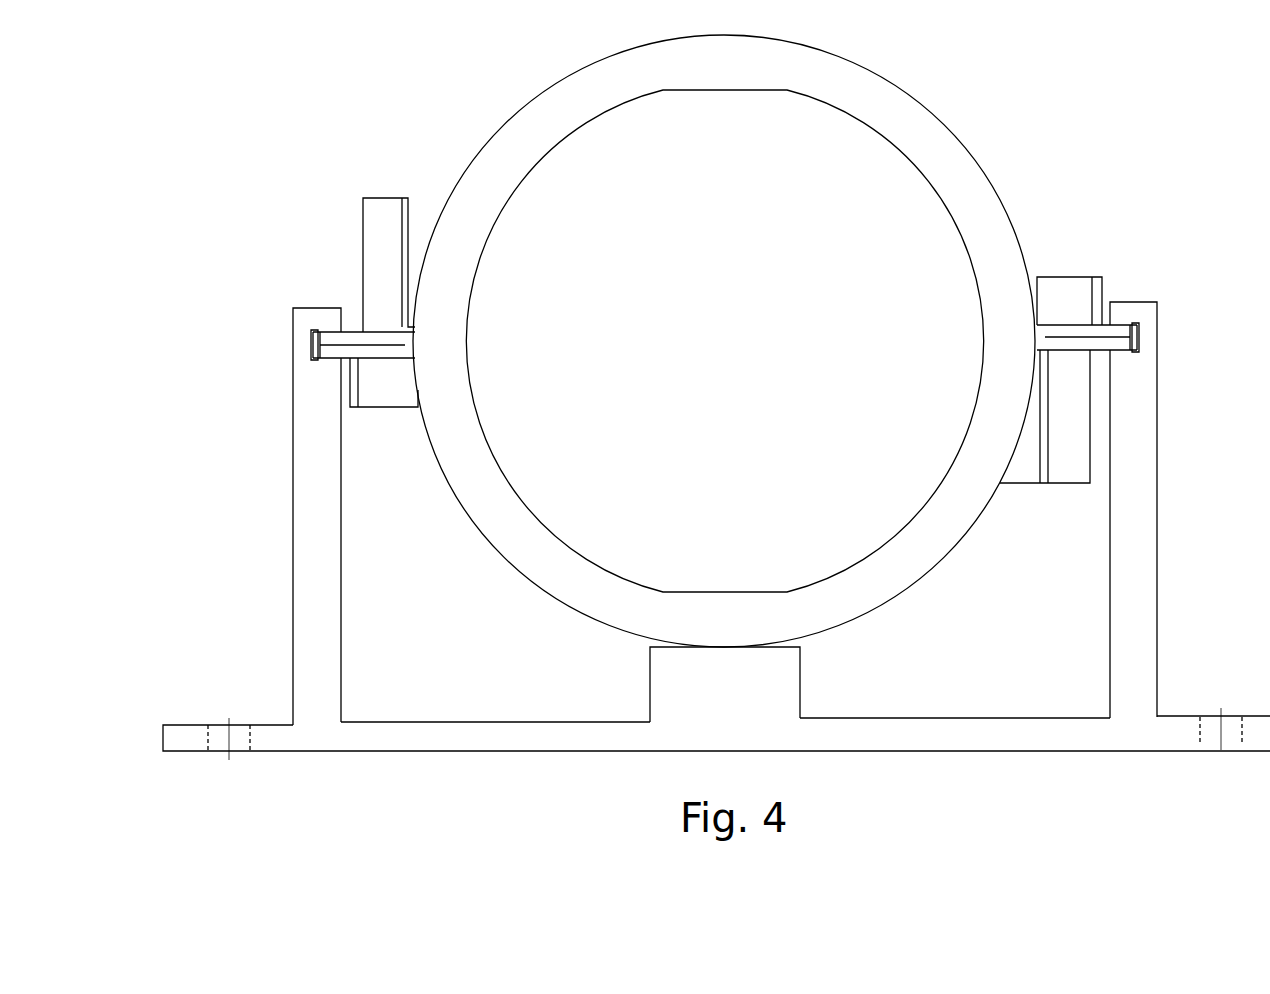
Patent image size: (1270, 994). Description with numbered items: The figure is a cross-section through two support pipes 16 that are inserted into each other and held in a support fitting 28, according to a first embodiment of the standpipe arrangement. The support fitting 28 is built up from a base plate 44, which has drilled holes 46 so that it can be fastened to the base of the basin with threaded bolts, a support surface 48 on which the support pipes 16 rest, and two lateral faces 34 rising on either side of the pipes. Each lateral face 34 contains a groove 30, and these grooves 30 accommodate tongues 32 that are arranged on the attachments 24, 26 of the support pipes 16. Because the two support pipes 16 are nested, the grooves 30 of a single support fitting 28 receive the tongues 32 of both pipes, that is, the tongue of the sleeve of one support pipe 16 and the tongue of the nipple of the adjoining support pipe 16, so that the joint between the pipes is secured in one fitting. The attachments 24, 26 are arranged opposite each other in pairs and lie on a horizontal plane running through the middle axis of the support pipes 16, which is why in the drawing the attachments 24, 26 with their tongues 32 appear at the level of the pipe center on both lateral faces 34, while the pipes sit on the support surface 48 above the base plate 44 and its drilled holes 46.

The support pipe 16 is at (1005, 122).
The attachment 24 is at (385, 395).
The attachment 26 is at (380, 215).
The support fitting 28 is at (1178, 615).
The groove 30 is at (313, 345).
The tongue 32 is at (330, 330).
The lateral face 34 is at (300, 488).
The base plate 44 is at (445, 740).
The drilled hole 46 is at (240, 740).
The support surface 48 is at (800, 647).